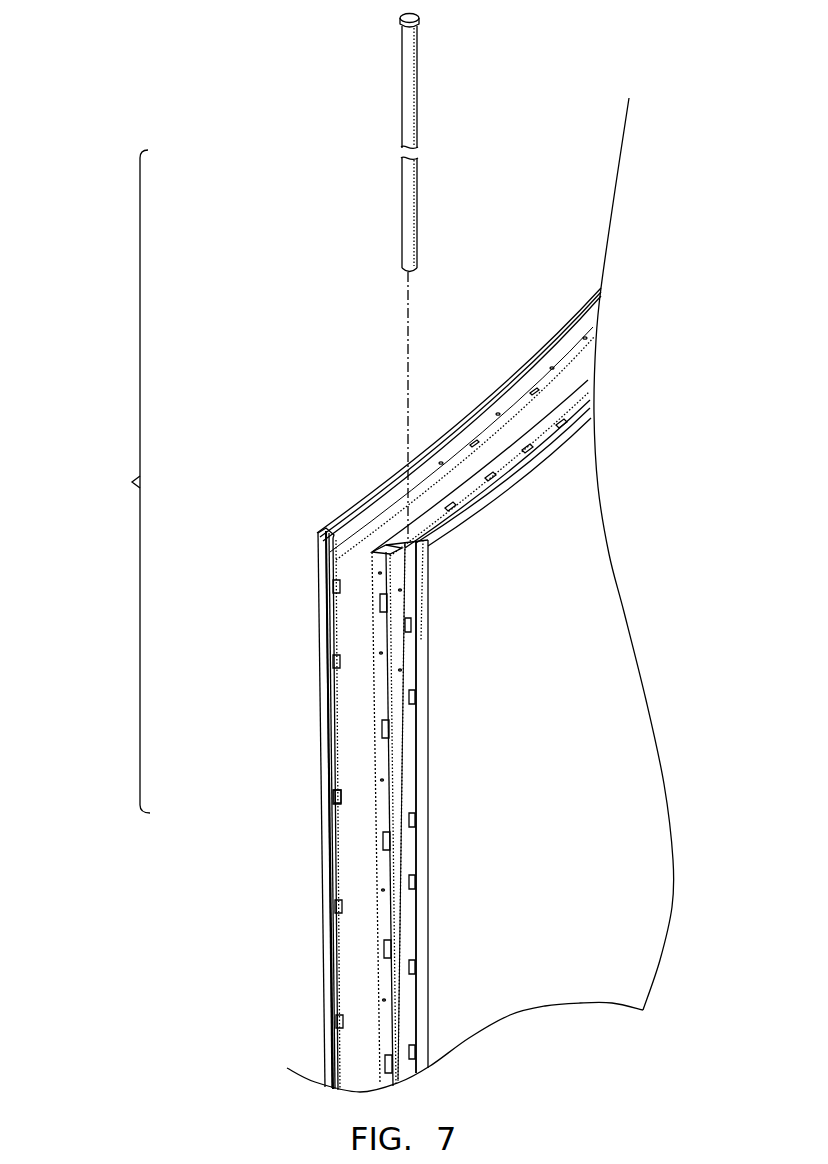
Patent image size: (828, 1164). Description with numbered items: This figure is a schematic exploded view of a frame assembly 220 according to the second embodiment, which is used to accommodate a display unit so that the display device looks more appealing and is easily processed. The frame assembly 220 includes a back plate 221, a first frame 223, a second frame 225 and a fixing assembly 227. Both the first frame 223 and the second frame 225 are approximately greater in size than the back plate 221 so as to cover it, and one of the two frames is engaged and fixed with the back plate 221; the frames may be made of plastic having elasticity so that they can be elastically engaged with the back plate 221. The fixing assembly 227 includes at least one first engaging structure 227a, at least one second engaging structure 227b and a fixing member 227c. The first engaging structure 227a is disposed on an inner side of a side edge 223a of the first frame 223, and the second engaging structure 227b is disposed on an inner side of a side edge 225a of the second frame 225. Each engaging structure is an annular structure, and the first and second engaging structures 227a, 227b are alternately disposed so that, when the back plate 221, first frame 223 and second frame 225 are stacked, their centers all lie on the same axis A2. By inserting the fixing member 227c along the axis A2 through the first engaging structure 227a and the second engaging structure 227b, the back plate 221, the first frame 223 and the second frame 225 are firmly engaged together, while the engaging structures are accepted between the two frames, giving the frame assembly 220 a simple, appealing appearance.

The frame assembly 220 is at (106, 54).
The back plate 221 is at (388, 918).
The first frame 223 is at (333, 1047).
The side edge of the first frame 223a is at (330, 845).
The second frame 225 is at (423, 991).
The side edge of the second frame 225a is at (418, 968).
The fixing assembly 227 is at (119, 481).
The first engaging structure 227a is at (337, 795).
The second engaging structure 227b is at (408, 622).
The fixing member 227c is at (373, 133).
The axis A2 is at (408, 337).